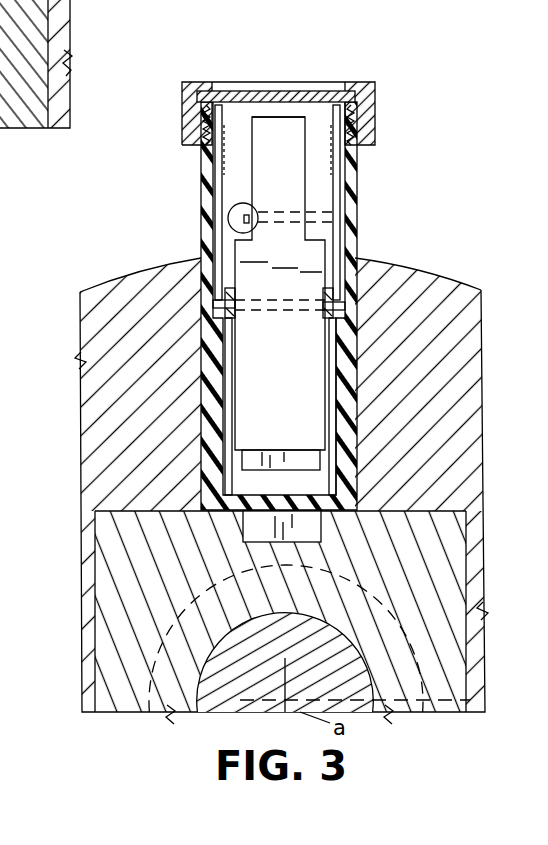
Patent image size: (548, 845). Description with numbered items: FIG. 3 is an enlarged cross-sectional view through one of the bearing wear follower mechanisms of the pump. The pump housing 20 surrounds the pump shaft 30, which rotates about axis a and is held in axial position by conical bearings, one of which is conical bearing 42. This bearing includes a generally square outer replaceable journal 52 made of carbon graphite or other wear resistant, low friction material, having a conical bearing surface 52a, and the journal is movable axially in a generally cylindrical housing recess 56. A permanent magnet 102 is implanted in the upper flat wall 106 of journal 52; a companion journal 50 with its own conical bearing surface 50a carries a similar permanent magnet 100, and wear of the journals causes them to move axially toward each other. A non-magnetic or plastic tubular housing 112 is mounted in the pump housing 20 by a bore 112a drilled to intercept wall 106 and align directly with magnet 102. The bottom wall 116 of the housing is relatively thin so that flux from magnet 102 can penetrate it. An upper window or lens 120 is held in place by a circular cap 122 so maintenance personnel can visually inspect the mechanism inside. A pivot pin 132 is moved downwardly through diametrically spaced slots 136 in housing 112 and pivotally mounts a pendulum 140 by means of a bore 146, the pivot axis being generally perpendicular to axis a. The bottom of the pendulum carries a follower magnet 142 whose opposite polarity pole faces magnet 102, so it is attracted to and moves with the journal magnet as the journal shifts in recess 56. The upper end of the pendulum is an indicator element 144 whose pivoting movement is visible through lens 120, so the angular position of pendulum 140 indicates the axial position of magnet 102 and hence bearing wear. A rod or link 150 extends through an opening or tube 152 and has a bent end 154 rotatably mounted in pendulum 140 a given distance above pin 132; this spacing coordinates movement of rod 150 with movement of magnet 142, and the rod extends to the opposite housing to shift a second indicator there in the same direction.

The housing 20 is at (100, 280).
The pump shaft 30 is at (220, 700).
The conical bearing 42 is at (154, 719).
The outer replaceable journal 50 is at (47, 50).
The conical bearing surface 50a is at (0, 148).
The outer replaceable journal 52 is at (100, 646).
The conical bearing surface 52a is at (412, 714).
The housing recess 56 is at (257, 528).
The permanent magnet 100 is at (66, 0).
The permanent magnet 102 is at (292, 557).
The upper flat wall 106 is at (401, 510).
The tubular housing 112 is at (358, 186).
The bore 112a is at (208, 346).
The bottom wall 116 is at (337, 487).
The window or lens 120 is at (296, 92).
The circular cap 122 is at (373, 95).
The pivot pin 132 is at (381, 257).
The slots 136 is at (218, 160).
The pendulum 140 is at (230, 393).
The follower magnet 142 is at (258, 457).
The indicator element 144 is at (265, 115).
The bore 146 is at (279, 316).
The rod or link 150 is at (240, 219).
The opening or tube 152 is at (235, 208).
The bent end 154 is at (357, 212).